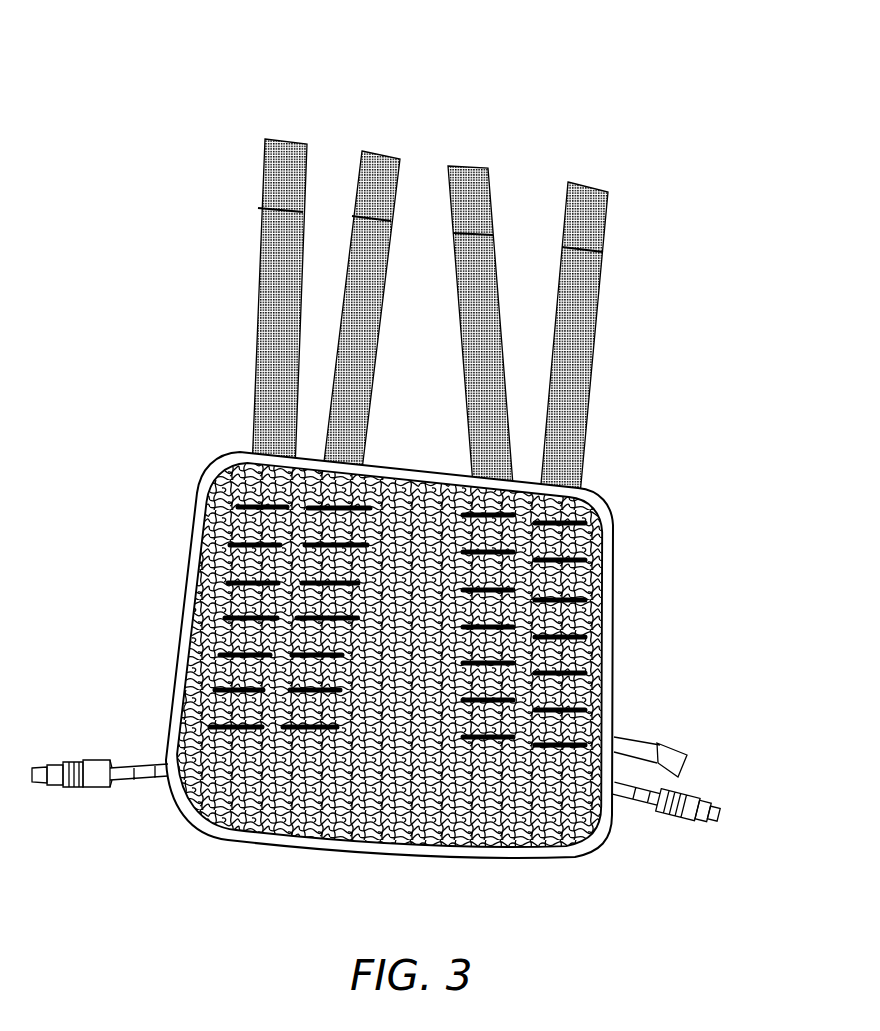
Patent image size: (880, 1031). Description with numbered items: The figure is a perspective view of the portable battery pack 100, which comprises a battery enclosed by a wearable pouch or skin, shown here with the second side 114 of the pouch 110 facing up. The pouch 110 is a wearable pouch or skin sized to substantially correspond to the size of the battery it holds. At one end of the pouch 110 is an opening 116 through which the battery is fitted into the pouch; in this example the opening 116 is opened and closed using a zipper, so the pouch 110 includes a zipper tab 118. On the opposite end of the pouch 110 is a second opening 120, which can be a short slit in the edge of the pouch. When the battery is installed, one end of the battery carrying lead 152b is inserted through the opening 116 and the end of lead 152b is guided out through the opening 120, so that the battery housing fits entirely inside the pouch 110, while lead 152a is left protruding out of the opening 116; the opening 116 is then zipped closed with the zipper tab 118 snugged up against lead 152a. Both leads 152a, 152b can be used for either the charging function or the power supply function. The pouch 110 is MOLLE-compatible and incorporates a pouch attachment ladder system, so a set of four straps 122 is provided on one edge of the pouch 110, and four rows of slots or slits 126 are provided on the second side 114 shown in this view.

The portable battery pack 100 is at (318, 67).
The pouch 110 is at (230, 444).
The second side 114 is at (438, 482).
The opening 116 is at (613, 602).
The zipper tab 118 is at (677, 752).
The opening 120 is at (165, 757).
The straps 122 is at (502, 300).
The slots or slits 126 is at (337, 545).
The lead 152a is at (703, 797).
The lead 152b is at (82, 762).